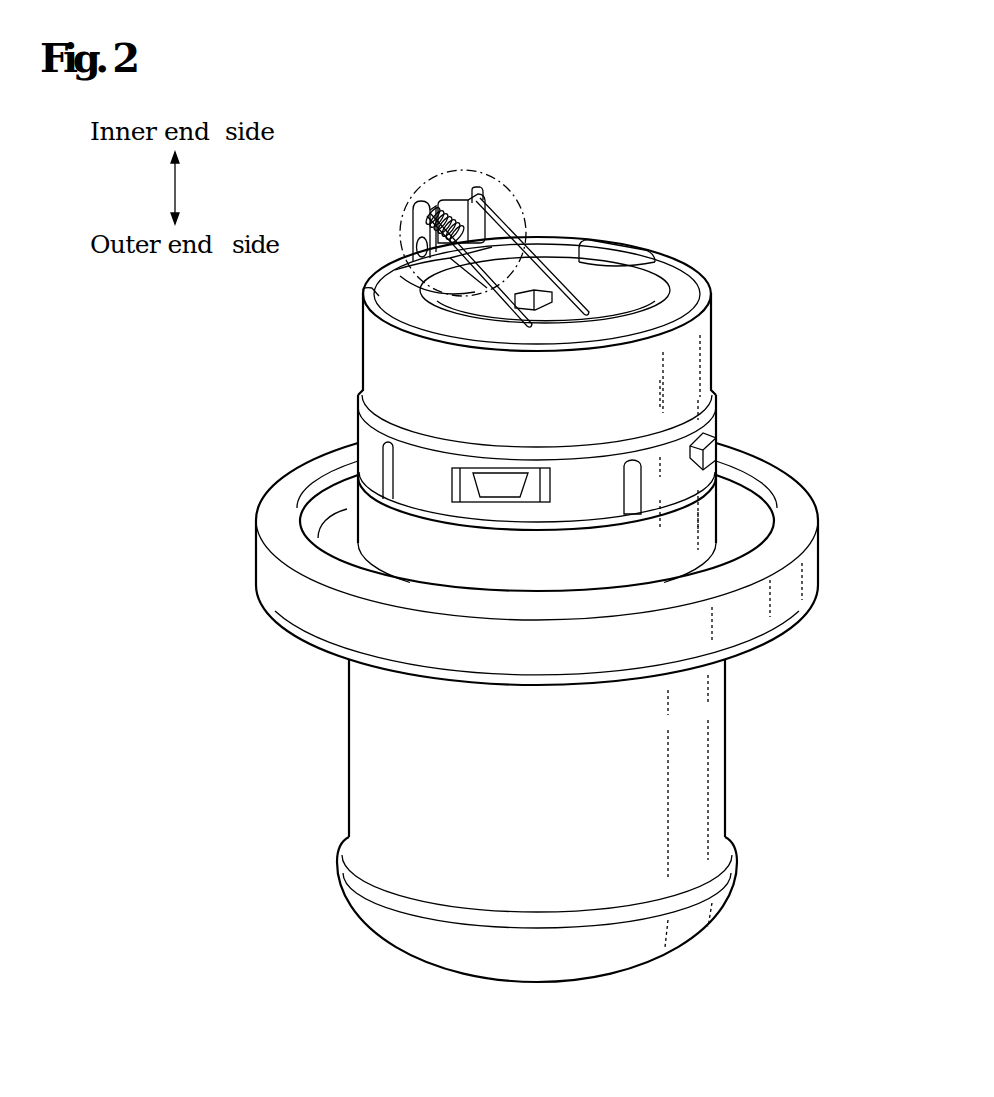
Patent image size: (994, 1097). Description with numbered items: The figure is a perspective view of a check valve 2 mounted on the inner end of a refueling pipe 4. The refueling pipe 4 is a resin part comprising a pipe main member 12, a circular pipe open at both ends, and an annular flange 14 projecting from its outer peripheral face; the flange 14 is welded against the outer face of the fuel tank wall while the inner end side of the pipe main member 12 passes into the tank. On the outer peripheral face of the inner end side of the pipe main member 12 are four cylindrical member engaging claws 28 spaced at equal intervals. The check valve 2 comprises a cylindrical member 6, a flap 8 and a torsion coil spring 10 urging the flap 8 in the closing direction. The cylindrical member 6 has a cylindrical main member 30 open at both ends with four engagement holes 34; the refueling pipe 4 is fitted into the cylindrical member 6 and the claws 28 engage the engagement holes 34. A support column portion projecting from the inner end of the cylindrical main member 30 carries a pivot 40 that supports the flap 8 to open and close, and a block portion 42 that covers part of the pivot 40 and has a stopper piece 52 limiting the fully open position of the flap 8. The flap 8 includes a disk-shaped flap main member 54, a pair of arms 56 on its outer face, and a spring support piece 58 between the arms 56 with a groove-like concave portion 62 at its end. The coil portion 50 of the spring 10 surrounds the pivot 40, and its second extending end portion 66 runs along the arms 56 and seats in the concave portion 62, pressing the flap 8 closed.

The check valve 2 is at (732, 201).
The refueling pipe 4 is at (731, 889).
The cylindrical member 6 is at (713, 343).
The flap 8 is at (569, 241).
The torsion coil spring 10 is at (433, 207).
The pipe main member 12 is at (367, 810).
The flange 14 is at (272, 568).
The cylindrical member engaging claw 28 is at (717, 441).
The cylindrical main member 30 is at (380, 374).
The engagement hole 34 is at (717, 425).
The pivot 40 is at (410, 237).
The block portion 42 is at (461, 191).
The coil portion 50 is at (447, 207).
The stopper piece 52 is at (487, 208).
The flap main member 54 is at (668, 288).
The pair of arms 56 is at (450, 262).
The spring support piece 58 is at (527, 310).
The concave portion 62 is at (560, 268).
The second extending end portion 66 is at (545, 260).